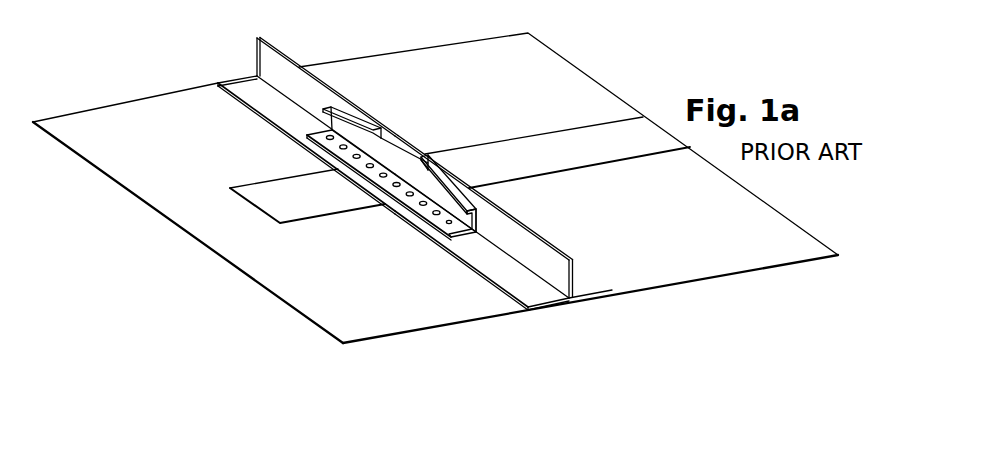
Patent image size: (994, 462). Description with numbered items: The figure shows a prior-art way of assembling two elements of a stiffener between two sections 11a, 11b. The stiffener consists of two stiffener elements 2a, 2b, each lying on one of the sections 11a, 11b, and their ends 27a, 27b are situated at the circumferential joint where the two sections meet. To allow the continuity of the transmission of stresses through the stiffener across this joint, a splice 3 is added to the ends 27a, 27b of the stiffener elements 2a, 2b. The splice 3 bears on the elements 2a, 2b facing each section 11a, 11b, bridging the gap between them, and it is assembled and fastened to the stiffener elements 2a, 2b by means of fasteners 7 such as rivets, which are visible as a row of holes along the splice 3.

The stiffener element 2a is at (246, 72).
The stiffener element 2b is at (598, 274).
The splice 3 is at (386, 140).
The fasteners 7 is at (437, 218).
The section 11a is at (130, 203).
The section 11b is at (258, 291).
The end of stiffener element 27a is at (384, 126).
The end of stiffener element 27b is at (408, 158).